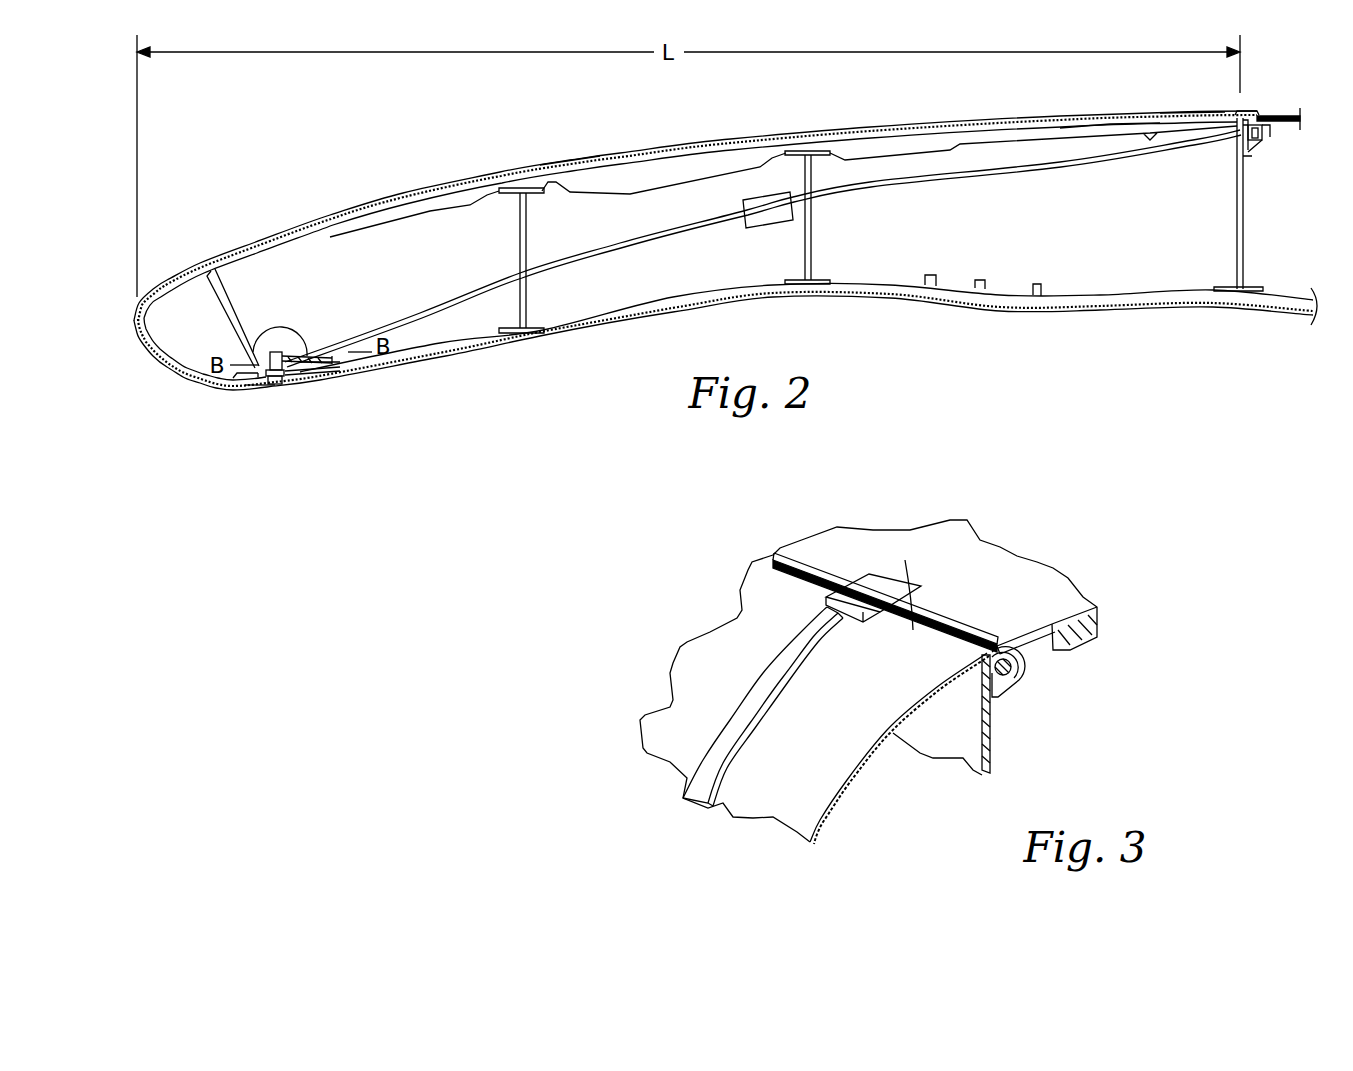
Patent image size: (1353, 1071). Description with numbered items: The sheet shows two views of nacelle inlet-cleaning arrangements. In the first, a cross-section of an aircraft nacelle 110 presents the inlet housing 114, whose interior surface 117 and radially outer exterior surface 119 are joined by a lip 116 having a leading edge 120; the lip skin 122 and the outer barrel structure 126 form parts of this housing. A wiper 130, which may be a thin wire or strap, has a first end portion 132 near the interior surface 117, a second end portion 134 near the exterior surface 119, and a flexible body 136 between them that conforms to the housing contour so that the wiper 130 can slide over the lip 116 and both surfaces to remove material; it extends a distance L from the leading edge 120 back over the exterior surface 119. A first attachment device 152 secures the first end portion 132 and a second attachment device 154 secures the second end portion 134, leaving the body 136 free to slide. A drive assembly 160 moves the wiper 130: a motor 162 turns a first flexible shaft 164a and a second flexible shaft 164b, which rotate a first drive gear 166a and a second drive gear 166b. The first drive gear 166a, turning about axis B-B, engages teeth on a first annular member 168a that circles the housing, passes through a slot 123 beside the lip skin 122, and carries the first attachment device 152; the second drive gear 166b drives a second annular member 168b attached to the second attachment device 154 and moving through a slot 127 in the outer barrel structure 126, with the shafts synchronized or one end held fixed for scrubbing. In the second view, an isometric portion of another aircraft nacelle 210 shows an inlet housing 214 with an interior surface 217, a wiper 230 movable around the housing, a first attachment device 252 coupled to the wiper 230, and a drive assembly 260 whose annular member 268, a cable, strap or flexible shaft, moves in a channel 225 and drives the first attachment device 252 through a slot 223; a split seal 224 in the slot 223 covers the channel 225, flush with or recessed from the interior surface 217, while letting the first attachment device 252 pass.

In FIG. 2, the aircraft nacelle 110 is at (370, 108).
In FIG. 2, the inlet housing 114 is at (655, 318).
In FIG. 2, the lip 116 is at (182, 274).
In FIG. 2, the interior surface 117 is at (330, 375).
In FIG. 2, the exterior surface 119 is at (559, 152).
In FIG. 2, the leading edge 120 is at (134, 310).
In FIG. 2, the lip skin 122 is at (238, 392).
In FIG. 2, the slot 123 is at (280, 392).
In FIG. 2, the outer barrel structure 126 is at (1110, 125).
In FIG. 2, the slot 127 is at (1278, 115).
In FIG. 2, the wiper 130 is at (300, 221).
In FIG. 2, the first end portion 132 is at (260, 397).
In FIG. 2, the second end portion 134 is at (1190, 110).
In FIG. 2, the body 136 is at (405, 190).
In FIG. 2, the first attachment device 152 is at (285, 390).
In FIG. 2, the second attachment device 154 is at (1247, 113).
In FIG. 2, the drive assembly 160 is at (826, 230).
In FIG. 2, the motor 162 is at (760, 195).
In FIG. 2, the first flexible shaft 164a is at (468, 292).
In FIG. 2, the second flexible shaft 164b is at (1205, 150).
In FIG. 2, the first drive gear 166a is at (280, 350).
In FIG. 2, the second drive gear 166b is at (1258, 142).
In FIG. 2, the first annular member 168a is at (305, 385).
In FIG. 2, the second annular member 168b is at (1266, 130).
In FIG. 3, the aircraft nacelle 210 is at (1030, 478).
In FIG. 3, the inlet housing 214 is at (848, 778).
In FIG. 3, the interior surface 217 is at (973, 560).
In FIG. 3, the slot 223 is at (932, 640).
In FIG. 3, the split seal 224 is at (1003, 640).
In FIG. 3, the channel 225 is at (993, 690).
In FIG. 3, the wiper 230 is at (740, 767).
In FIG. 3, the first attachment device 252 is at (868, 578).
In FIG. 3, the drive assembly 260 is at (1030, 685).
In FIG. 3, the annular member 268 is at (1020, 673).